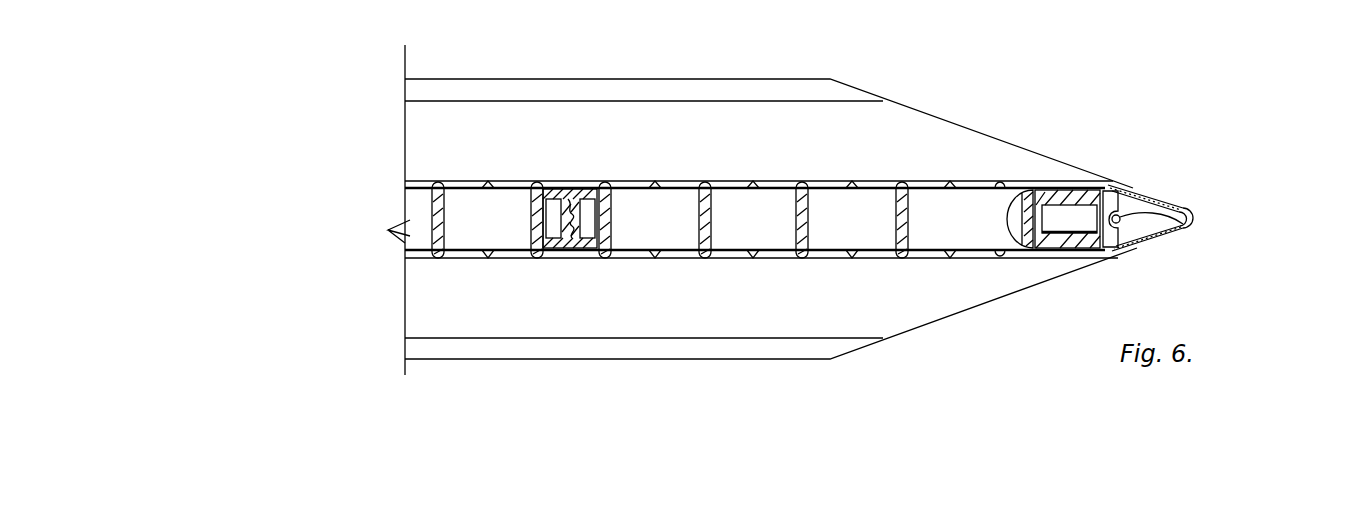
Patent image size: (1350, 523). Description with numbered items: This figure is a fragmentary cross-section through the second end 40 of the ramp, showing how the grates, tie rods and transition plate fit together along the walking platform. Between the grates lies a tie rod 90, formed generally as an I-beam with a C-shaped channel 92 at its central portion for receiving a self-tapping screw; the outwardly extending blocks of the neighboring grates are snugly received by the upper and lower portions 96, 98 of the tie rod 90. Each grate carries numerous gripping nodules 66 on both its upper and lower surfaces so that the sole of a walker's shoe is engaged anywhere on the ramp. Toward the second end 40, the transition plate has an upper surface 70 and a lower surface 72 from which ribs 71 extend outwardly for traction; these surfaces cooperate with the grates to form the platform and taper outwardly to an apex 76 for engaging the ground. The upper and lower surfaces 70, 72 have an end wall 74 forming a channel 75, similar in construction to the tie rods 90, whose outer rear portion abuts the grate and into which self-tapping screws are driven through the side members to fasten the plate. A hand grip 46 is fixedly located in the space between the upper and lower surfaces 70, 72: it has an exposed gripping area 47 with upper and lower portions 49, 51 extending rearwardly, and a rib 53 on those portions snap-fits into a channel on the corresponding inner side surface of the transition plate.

The second end of ramp 40 is at (1225, 198).
The hand grip 46 is at (995, 218).
The exposed gripping area 47 is at (1013, 218).
The upper portion of hand grip 49 is at (1085, 190).
The lower portion of hand grip 51 is at (1087, 245).
The rib 53 is at (1066, 190).
The gripping nodules 66 is at (852, 188).
The upper surface of transition plate 70 is at (1201, 203).
The ribs 71 is at (1167, 205).
The lower surface of transition plate 72 is at (1050, 246).
The end wall 74 is at (1136, 249).
The channel 75 is at (1178, 225).
The apex 76 is at (1189, 216).
The tie rod 90 is at (570, 217).
The C-shaped channel 92 is at (570, 195).
The upper portion of tie rod 96 is at (587, 197).
The lower portion of tie rod 98 is at (560, 256).